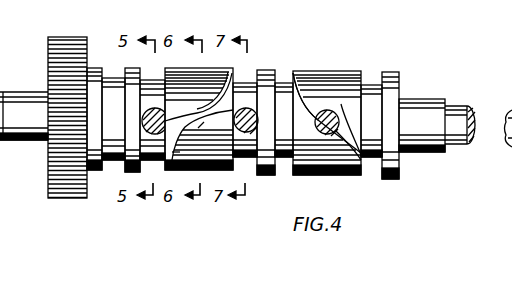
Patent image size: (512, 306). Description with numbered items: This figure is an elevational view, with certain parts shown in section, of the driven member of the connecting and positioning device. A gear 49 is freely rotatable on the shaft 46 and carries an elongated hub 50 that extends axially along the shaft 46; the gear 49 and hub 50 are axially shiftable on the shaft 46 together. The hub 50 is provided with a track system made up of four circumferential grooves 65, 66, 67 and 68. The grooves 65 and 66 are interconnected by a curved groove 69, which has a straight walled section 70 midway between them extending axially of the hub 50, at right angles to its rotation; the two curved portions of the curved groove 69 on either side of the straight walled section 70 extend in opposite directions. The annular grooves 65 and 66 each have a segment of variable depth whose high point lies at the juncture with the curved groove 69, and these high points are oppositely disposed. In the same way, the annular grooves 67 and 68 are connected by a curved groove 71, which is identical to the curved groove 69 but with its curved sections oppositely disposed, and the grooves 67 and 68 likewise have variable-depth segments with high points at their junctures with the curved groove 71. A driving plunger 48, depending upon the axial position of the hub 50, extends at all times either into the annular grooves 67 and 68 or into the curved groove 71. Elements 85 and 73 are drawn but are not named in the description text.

The gear 49 is at (75, 40).
The flange 85 is at (114, 78).
The pin 73 is at (130, 124).
The circumferential groove 65 is at (158, 88).
The straight walled section 70 is at (210, 118).
The curved groove 69 is at (186, 153).
The curved groove 71 is at (246, 129).
The circumferential groove 66 is at (250, 171).
The circumferential groove 67 is at (293, 76).
The hub 50 is at (323, 72).
The circumferential groove 68 is at (374, 75).
The driving plunger 48 is at (326, 111).
The shaft 46 is at (456, 106).